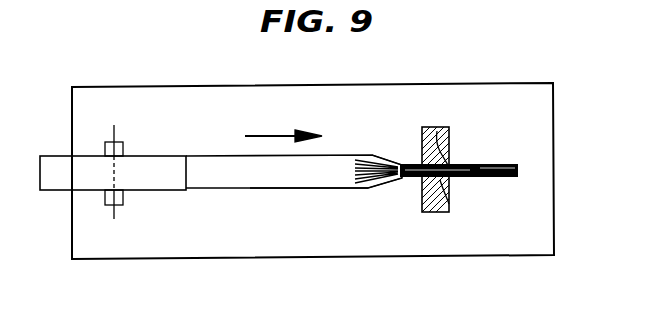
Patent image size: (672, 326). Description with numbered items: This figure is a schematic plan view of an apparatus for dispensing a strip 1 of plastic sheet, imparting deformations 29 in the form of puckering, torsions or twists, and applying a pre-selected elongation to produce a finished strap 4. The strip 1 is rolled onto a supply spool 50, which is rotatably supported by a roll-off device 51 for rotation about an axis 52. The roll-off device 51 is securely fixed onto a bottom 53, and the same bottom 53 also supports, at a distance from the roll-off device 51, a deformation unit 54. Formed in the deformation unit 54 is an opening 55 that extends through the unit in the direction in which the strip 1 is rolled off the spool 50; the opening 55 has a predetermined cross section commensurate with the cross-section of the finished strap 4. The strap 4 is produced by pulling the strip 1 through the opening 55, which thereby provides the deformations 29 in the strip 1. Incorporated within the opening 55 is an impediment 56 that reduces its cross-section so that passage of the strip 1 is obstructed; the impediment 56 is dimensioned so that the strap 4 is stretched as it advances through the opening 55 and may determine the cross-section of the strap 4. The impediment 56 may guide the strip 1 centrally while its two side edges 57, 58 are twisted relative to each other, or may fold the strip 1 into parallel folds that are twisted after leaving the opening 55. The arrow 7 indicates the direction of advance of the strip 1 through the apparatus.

The strip 1 is at (218, 180).
The strap 4 is at (513, 180).
The direction of movement 7 is at (282, 133).
The deformations 29 is at (393, 180).
The supply spool 50 is at (147, 165).
The roll-off device 51 is at (103, 198).
The axis 52 is at (113, 132).
The bottom 53 is at (235, 257).
The deformation unit 54 is at (440, 130).
The opening 55 is at (453, 150).
The impediment 56 is at (449, 206).
The side edge 57 is at (343, 153).
The side edge 58 is at (317, 190).